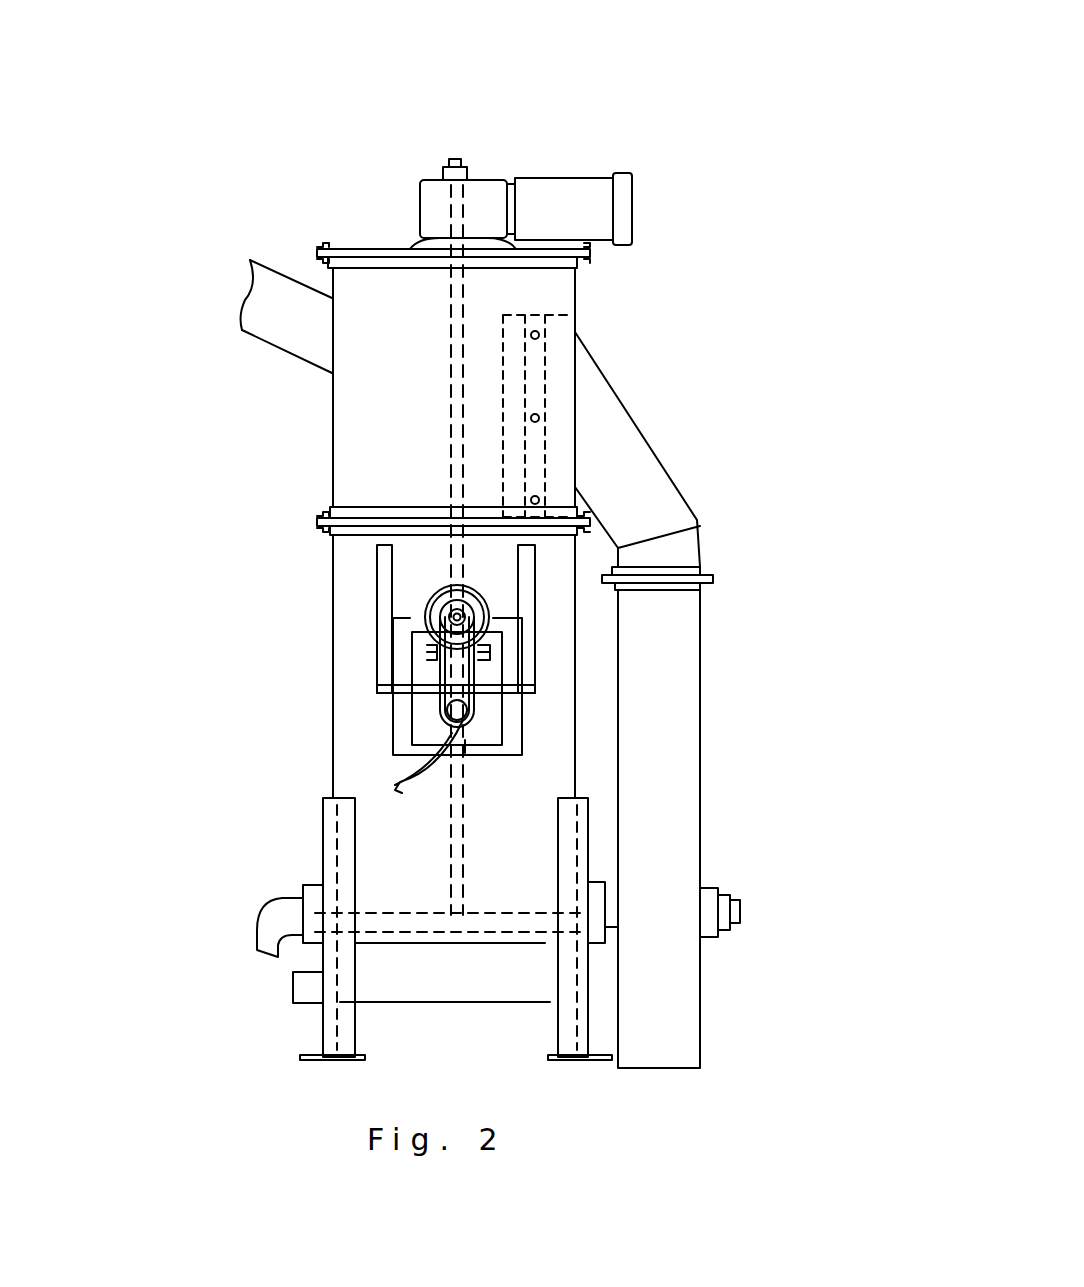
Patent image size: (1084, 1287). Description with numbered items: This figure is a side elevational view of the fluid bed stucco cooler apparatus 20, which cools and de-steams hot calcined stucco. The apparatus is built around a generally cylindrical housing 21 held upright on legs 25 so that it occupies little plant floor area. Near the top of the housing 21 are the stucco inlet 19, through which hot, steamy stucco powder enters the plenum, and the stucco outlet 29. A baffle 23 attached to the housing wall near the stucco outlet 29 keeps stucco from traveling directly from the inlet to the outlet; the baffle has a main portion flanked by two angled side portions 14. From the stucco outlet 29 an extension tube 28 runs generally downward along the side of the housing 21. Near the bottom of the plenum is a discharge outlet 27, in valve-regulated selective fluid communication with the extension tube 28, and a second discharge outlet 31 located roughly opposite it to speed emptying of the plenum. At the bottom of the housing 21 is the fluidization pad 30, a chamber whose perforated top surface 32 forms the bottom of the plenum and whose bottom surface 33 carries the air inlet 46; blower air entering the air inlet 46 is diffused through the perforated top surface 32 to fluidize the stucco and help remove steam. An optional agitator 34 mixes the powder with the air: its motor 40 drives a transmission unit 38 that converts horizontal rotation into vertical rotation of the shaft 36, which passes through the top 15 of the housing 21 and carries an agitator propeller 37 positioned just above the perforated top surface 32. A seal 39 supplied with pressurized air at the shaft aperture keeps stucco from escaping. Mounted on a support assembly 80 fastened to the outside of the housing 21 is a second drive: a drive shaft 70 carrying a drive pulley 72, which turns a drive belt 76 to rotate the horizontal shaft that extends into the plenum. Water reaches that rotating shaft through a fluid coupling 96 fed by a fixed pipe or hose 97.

The fluid bed stucco cooler apparatus 20 is at (222, 137).
The agitator 34 is at (528, 150).
The transmission unit 38 is at (428, 190).
The shaft 36 is at (462, 190).
The motor 40 is at (590, 188).
The seal 39 is at (415, 243).
The top 15 is at (348, 250).
The stucco inlet 19 is at (285, 340).
The housing 21 is at (555, 290).
The baffle 23 is at (583, 308).
The stucco outlet 29 is at (578, 365).
The side portions 14 is at (525, 380).
The extension tube 28 is at (697, 520).
The drive pulley 72 is at (453, 600).
The drive shaft 70 is at (455, 617).
The drive belt 76 is at (445, 668).
The support assembly 80 is at (405, 688).
The fluid coupling 96 is at (445, 710).
The pipe or hose 97 is at (397, 783).
The second discharge outlet 31 is at (320, 897).
The agitator propeller 37 is at (382, 920).
The air inlet 46 is at (298, 987).
The legs 25 is at (330, 1035).
The bottom surface 33 is at (403, 1003).
The discharge outlet 27 is at (605, 903).
The perforated top surface 32 is at (543, 943).
The fluidization pad 30 is at (543, 980).